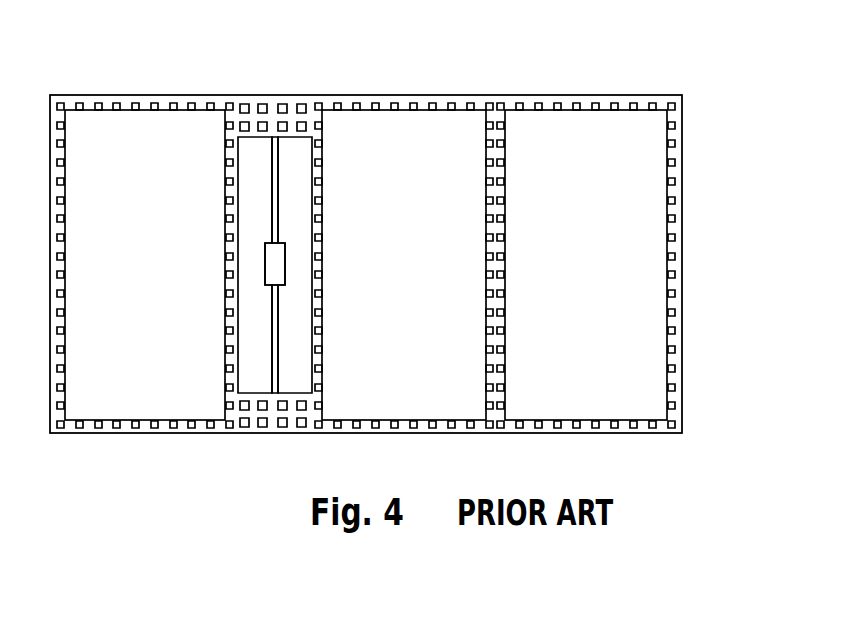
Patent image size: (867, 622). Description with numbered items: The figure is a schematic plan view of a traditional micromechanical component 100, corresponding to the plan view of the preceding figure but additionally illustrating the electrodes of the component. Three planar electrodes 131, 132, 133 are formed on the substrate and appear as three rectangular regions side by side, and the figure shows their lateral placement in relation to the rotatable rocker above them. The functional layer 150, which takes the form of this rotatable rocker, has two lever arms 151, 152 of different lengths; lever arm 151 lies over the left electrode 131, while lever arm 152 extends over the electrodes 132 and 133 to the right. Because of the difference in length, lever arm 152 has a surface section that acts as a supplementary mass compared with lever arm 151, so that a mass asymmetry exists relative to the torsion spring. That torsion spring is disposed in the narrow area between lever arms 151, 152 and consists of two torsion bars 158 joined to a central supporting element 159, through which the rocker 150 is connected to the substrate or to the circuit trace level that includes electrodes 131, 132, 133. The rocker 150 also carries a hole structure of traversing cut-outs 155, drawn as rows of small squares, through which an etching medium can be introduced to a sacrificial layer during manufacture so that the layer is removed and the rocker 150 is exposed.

The micromechanical component 100 is at (652, 42).
The planar electrode 131 is at (135, 400).
The planar electrode 132 is at (407, 392).
The planar electrode 133 is at (600, 390).
The functional layer 150 is at (477, 422).
The lever arm 151 is at (107, 105).
The lever arm 152 is at (585, 105).
The traversing cut-outs 155 is at (245, 106).
The torsion bars 158 is at (273, 158).
The supporting element 159 is at (277, 262).